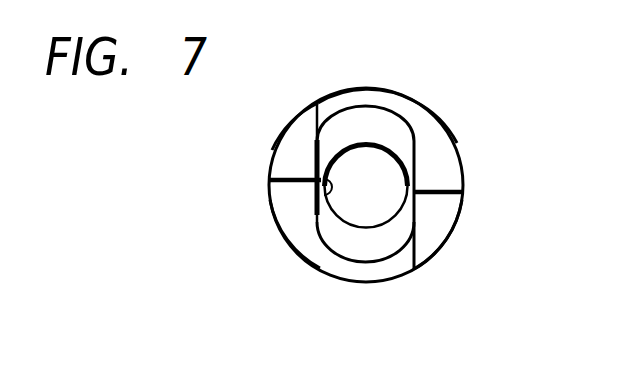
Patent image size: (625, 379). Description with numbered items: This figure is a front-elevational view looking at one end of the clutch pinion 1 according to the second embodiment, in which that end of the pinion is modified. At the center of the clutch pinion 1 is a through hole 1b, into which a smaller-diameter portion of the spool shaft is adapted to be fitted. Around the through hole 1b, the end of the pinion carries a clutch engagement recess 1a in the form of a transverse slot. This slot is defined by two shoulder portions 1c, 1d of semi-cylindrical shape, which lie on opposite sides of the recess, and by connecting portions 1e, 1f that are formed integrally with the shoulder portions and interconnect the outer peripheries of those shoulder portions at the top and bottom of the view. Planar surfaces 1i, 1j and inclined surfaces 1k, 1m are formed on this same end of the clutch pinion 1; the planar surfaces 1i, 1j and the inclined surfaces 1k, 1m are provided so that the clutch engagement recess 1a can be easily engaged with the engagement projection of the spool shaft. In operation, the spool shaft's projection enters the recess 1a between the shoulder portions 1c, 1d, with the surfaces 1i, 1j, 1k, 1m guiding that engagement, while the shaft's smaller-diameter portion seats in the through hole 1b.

The clutch pinion 1 is at (396, 185).
The clutch engagement recess 1a is at (353, 120).
The through hole 1b is at (324, 188).
The shoulder portion 1c is at (270, 178).
The shoulder portion 1d is at (450, 185).
The connecting portion 1e is at (368, 97).
The connecting portion 1f is at (363, 273).
The planar surface 1i is at (287, 148).
The planar surface 1j is at (438, 223).
The inclined surface 1k is at (300, 242).
The inclined surface 1m is at (425, 118).